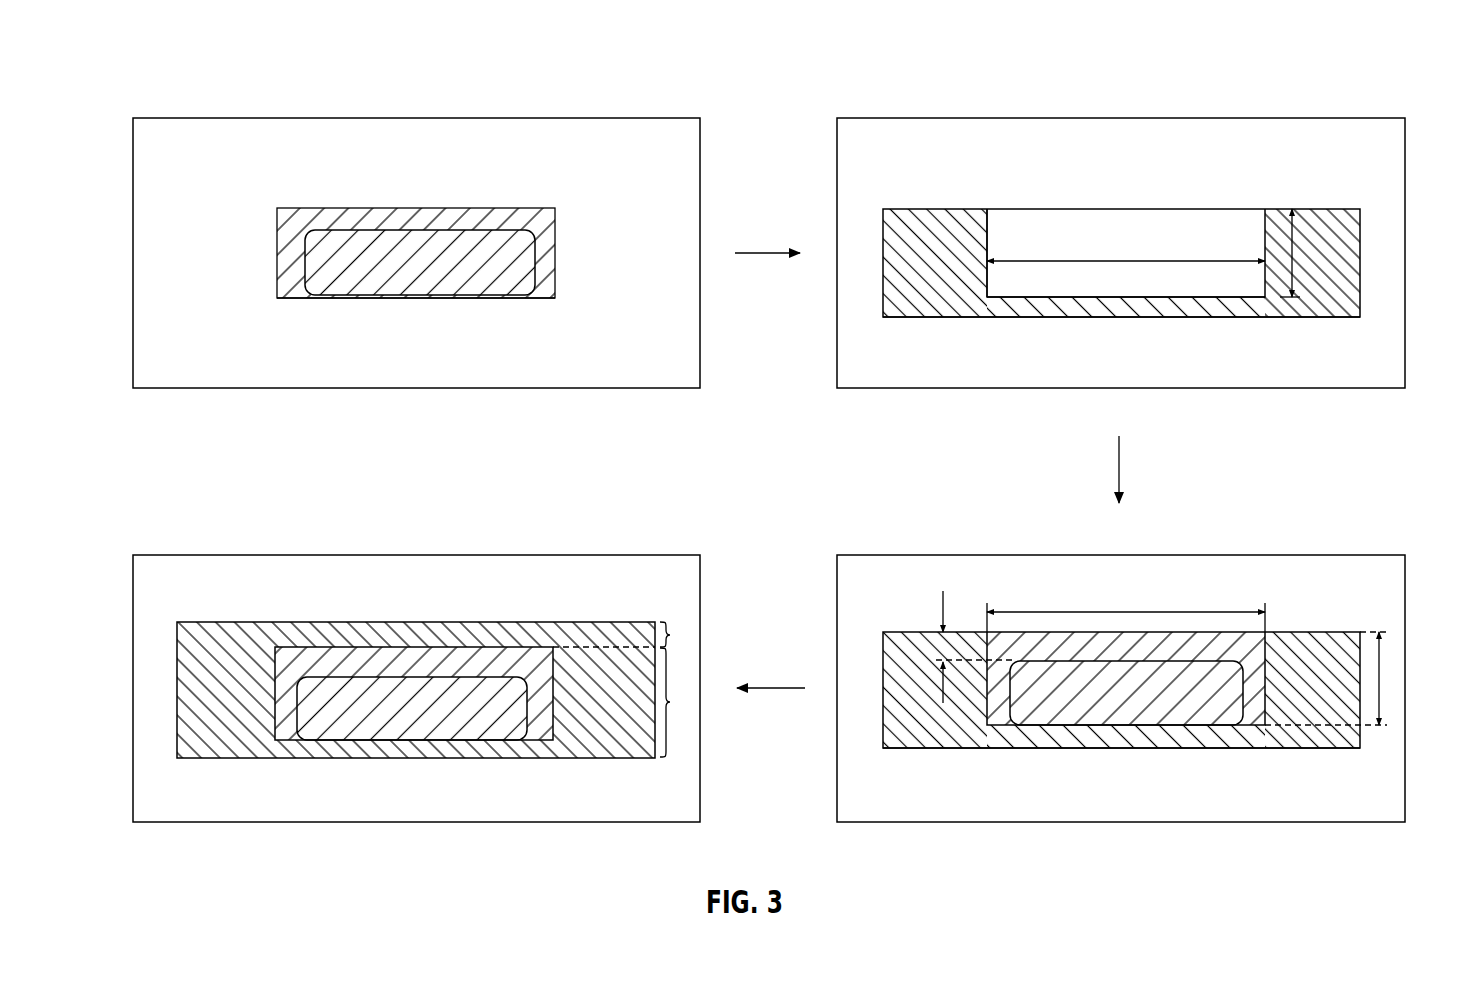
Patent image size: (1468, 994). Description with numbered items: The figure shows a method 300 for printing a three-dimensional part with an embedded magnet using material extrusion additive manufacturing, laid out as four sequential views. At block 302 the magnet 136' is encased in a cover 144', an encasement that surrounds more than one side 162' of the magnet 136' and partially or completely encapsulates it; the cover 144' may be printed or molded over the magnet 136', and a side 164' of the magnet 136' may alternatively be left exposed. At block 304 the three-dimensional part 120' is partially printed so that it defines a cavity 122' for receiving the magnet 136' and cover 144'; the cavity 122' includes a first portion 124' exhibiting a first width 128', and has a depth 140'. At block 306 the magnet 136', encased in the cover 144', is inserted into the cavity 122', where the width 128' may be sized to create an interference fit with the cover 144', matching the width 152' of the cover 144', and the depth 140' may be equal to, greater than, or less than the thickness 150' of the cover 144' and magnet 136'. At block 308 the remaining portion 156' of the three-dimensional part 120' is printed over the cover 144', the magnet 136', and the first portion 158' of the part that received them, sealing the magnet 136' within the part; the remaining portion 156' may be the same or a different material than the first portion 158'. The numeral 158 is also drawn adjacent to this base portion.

The method 300 is at (156, 63).
The block 302 is at (547, 118).
The block 304 is at (1318, 118).
The block 306 is at (1270, 555).
The block 308 is at (547, 555).
The three-dimensional part 120' is at (768, 448).
The cavity 122' is at (770, 472).
The first portion 124' is at (1035, 221).
The first width 128' is at (1126, 318).
The magnet 136' is at (770, 485).
The depth 140' is at (1359, 466).
The cover 144' is at (790, 527).
The thickness 150' is at (983, 638).
The width 152' is at (1126, 572).
The remaining portion 156' is at (662, 650).
The base portion 158 is at (708, 702).
The first portion 158' is at (1110, 552).
The side 162' is at (381, 238).
The side 164' is at (771, 331).